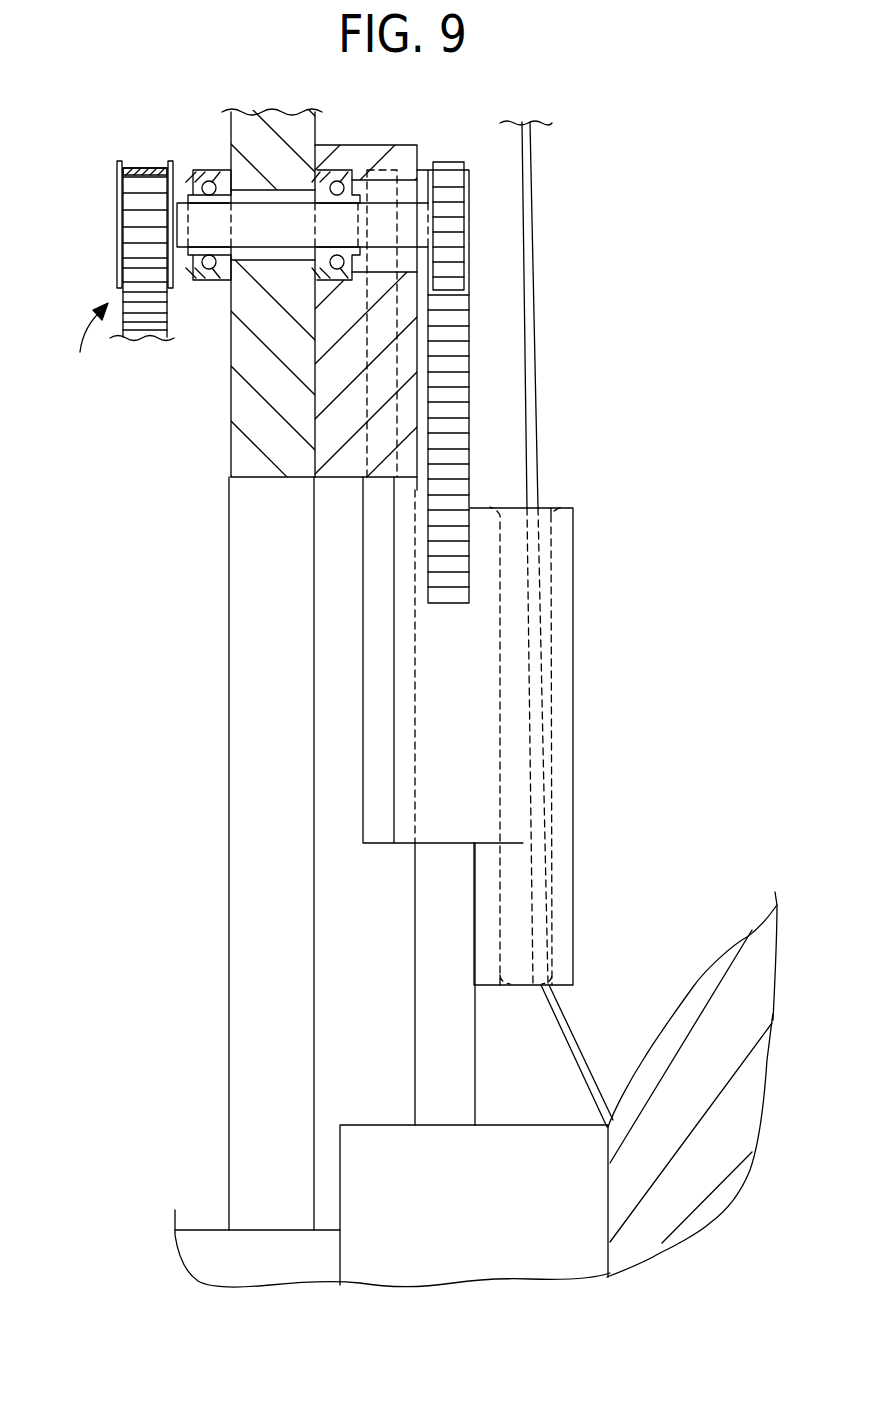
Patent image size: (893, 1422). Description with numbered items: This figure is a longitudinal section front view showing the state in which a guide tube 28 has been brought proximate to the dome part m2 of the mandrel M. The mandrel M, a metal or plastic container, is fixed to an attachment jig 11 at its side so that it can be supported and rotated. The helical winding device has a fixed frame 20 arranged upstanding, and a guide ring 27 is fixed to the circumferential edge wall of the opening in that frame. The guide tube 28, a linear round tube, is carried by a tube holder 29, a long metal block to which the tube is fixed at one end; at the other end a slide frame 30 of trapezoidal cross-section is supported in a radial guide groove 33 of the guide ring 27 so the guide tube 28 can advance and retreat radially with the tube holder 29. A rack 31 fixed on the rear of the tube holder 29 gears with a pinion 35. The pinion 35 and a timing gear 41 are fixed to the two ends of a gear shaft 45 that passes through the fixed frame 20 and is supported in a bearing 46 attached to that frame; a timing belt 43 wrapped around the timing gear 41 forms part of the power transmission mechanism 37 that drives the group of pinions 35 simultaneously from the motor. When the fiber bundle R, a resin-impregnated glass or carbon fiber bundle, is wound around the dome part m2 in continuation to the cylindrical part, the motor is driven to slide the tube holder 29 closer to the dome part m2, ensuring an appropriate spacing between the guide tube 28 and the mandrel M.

The attachment jig 11 is at (198, 1232).
The fixed frame 20 is at (230, 396).
The guide ring 27 is at (396, 145).
The guide tube 28 is at (574, 856).
The tube holder 29 is at (446, 845).
The slide frame 30 is at (366, 653).
The rack 31 is at (467, 412).
The radial guide groove 33 is at (378, 480).
The pinion 35 is at (446, 170).
The power transmission mechanism 37 is at (88, 350).
The timing gear 41 is at (117, 230).
The timing belt 43 is at (144, 162).
The gear shaft 45 is at (266, 212).
The bearing 46 is at (196, 265).
The fiber bundle R is at (571, 1052).
The mandrel M is at (743, 938).
The dome part m2 is at (700, 980).